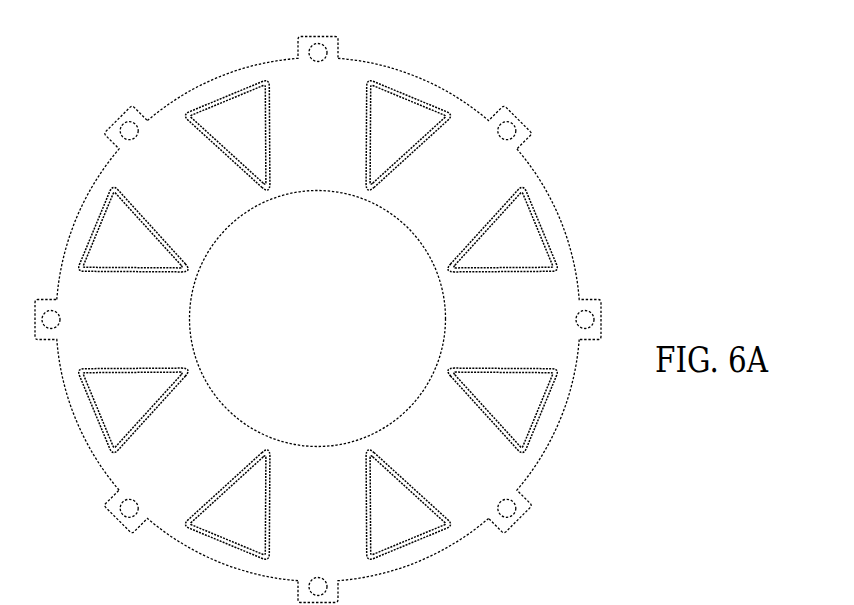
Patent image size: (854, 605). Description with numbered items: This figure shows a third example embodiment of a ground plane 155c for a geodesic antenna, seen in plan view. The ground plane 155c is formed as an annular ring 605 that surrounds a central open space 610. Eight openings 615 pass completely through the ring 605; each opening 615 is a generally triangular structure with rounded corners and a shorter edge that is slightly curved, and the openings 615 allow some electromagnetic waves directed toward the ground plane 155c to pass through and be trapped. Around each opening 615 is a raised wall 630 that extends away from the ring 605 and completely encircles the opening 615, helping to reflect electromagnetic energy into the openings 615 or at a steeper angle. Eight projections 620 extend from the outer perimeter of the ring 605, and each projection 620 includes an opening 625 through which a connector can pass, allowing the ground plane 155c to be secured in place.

The ground plane 155c is at (158, 70).
The annular ring 605 is at (129, 175).
The open space 610 is at (308, 241).
The opening 615 is at (528, 253).
The projection 620 is at (518, 117).
The opening 625 is at (588, 310).
The raised wall 630 is at (417, 97).